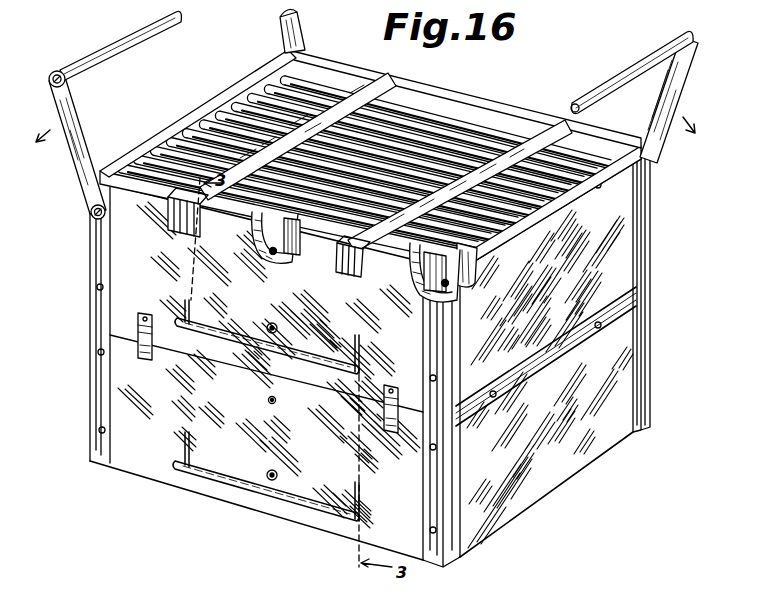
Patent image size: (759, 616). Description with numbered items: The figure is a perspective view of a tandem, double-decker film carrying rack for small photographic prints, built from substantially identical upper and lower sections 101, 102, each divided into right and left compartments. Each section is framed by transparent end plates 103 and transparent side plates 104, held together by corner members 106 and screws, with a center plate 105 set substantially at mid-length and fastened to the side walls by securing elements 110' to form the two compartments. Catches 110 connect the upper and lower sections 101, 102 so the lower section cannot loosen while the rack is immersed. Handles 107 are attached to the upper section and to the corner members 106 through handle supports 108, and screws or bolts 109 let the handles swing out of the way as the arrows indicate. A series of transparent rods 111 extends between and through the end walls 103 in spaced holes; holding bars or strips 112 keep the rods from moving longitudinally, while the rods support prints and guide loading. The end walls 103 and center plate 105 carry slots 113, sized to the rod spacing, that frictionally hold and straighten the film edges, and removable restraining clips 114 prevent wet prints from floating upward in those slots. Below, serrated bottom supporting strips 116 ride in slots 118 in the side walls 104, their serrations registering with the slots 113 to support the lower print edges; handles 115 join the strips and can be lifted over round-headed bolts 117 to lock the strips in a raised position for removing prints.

The upper rack section 101 is at (125, 240).
The lower rack section 102 is at (121, 384).
The transparent end plate 103 is at (222, 97).
The transparent side plate 104 is at (112, 267).
The center plate 105 is at (262, 240).
The corner member 106 is at (95, 325).
The handle 107 is at (127, 50).
The handle support 108 is at (72, 110).
The screw, rod or bolt 109 is at (90, 210).
The catch 110 is at (268, 350).
The securing element 110' is at (338, 326).
The rod 111 is at (267, 100).
The holding bar or strip 112 is at (157, 133).
The slot 113 is at (193, 127).
The restraining clamp or clip 114 is at (372, 72).
The handle 115 is at (305, 350).
The bottom supporting strip 116 is at (360, 365).
The round-headed bolt 117 is at (272, 323).
The slot 118 is at (357, 333).